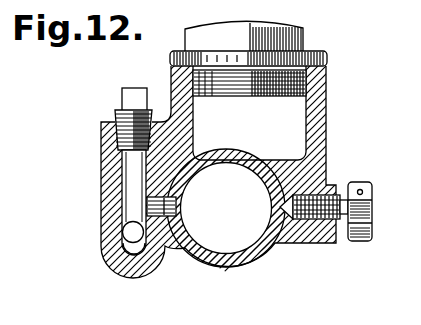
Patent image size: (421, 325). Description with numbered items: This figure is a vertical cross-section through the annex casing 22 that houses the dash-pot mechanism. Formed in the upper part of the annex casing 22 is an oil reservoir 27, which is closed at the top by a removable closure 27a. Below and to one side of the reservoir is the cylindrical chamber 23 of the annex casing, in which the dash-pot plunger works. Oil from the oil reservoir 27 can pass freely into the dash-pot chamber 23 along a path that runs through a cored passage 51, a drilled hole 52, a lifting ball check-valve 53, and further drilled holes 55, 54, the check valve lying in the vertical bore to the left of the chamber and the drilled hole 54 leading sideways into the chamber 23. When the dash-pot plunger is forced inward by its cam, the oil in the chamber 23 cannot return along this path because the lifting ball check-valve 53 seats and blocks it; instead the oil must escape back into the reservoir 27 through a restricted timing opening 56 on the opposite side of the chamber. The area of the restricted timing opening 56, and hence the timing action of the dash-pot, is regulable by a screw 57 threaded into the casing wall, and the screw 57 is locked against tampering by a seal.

The annex casing 22 is at (326, 100).
The cylindrical chamber 23 is at (221, 250).
The oil reservoir 27 is at (280, 121).
The removable closure 27a is at (290, 38).
The cored passage 51 is at (182, 148).
The drilled hole 52 is at (138, 252).
The lifting ball check-valve 53 is at (120, 241).
The drilled hole 54 is at (170, 207).
The drilled hole 55 is at (133, 170).
The restricted timing opening 56 is at (283, 238).
The screw 57 is at (358, 182).